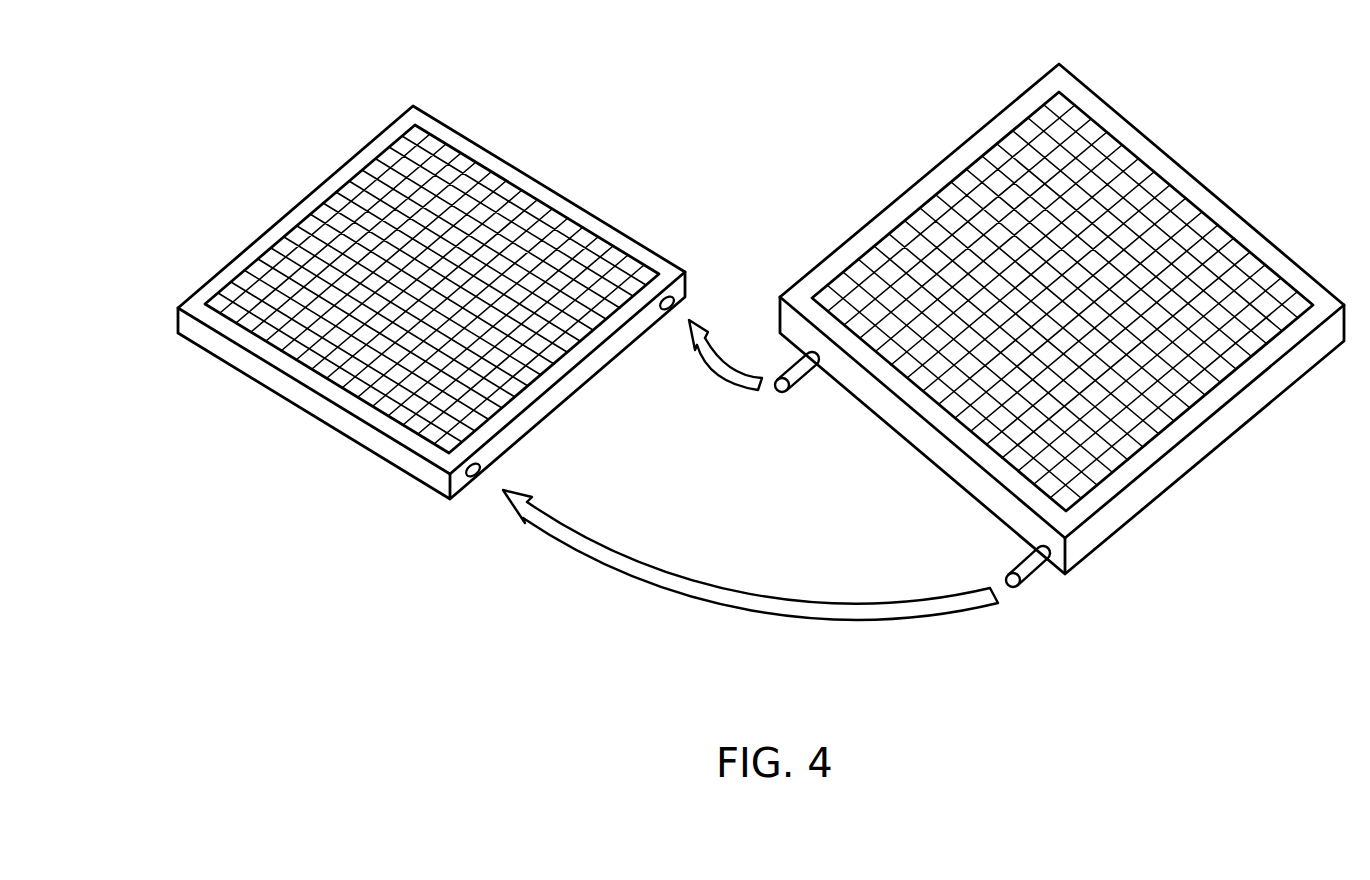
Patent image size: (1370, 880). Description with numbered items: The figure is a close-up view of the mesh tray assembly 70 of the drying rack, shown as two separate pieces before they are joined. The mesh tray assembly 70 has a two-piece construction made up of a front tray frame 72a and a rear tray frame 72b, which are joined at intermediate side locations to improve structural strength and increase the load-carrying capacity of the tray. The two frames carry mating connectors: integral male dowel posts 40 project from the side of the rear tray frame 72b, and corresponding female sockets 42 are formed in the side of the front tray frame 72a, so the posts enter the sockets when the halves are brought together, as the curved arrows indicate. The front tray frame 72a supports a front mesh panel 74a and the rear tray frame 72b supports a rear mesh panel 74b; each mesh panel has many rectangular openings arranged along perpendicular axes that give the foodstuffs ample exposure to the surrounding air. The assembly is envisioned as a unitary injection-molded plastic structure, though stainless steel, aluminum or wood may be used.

The mesh tray assembly 70 is at (268, 102).
The front tray frame 72a is at (397, 457).
The rear tray frame 72b is at (912, 205).
The front mesh panel 74a is at (333, 372).
The rear mesh panel 74b is at (1040, 232).
The male dowel posts 40 is at (800, 380).
The female sockets 42 is at (688, 300).